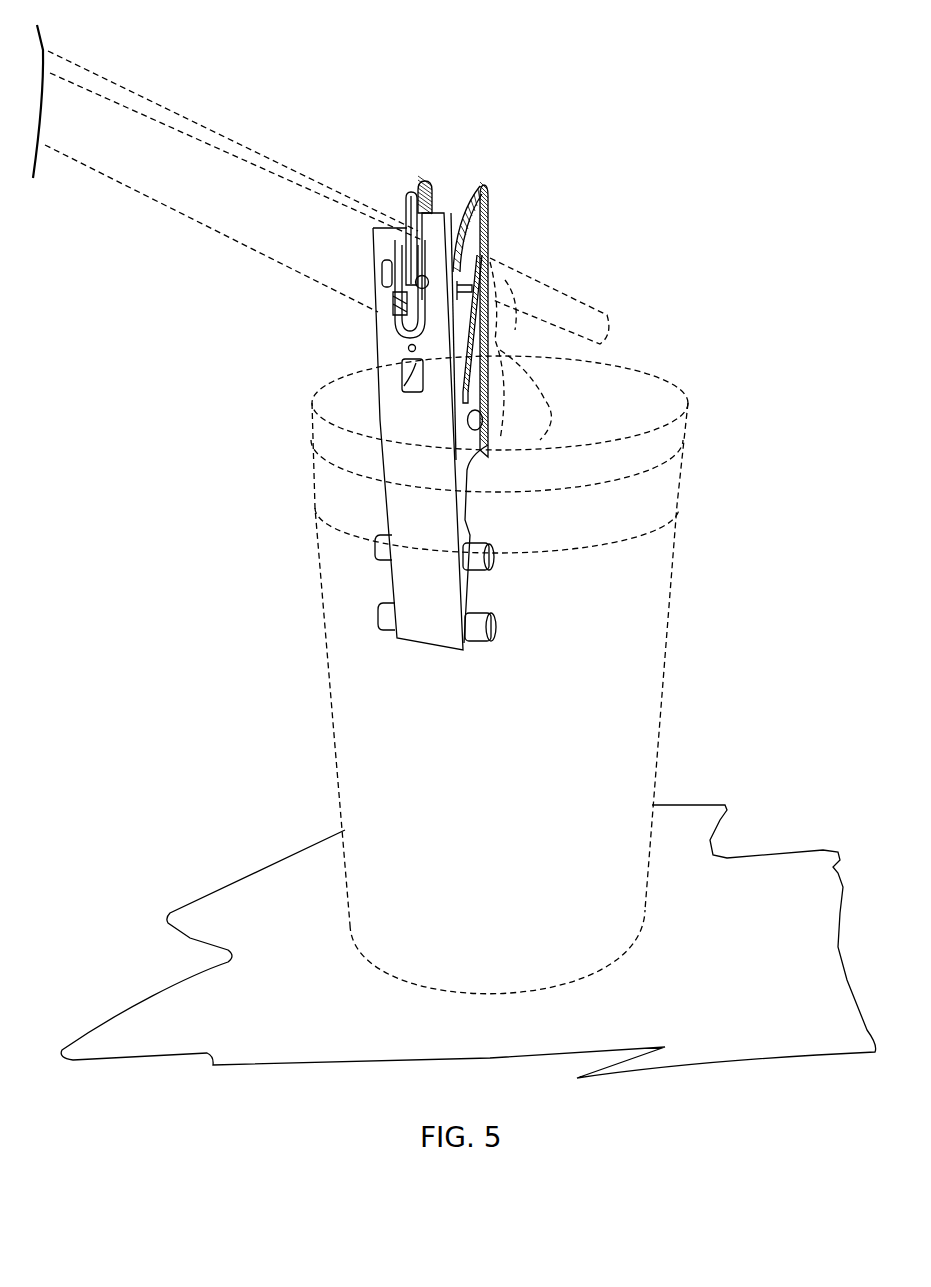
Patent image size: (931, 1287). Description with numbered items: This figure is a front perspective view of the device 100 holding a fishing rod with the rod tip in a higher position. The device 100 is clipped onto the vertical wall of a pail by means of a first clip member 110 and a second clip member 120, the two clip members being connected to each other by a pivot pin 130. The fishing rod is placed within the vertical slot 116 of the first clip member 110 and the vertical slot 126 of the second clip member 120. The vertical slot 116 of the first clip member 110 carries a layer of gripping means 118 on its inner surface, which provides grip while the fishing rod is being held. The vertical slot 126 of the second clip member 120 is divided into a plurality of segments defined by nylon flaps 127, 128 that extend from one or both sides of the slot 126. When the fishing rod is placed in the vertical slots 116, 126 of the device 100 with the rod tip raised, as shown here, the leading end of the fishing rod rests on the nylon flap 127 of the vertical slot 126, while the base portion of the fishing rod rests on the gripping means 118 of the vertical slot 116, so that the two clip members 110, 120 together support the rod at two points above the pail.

The device 100 is at (485, 72).
The first clip member 110 is at (488, 244).
The vertical slot 116 is at (457, 213).
The gripping means 118 is at (427, 183).
The second clip member 120 is at (385, 352).
The vertical slot 126 is at (399, 217).
The nylon flap 127 is at (410, 253).
The nylon flap 128 is at (400, 319).
The pivot pin 130 is at (467, 418).